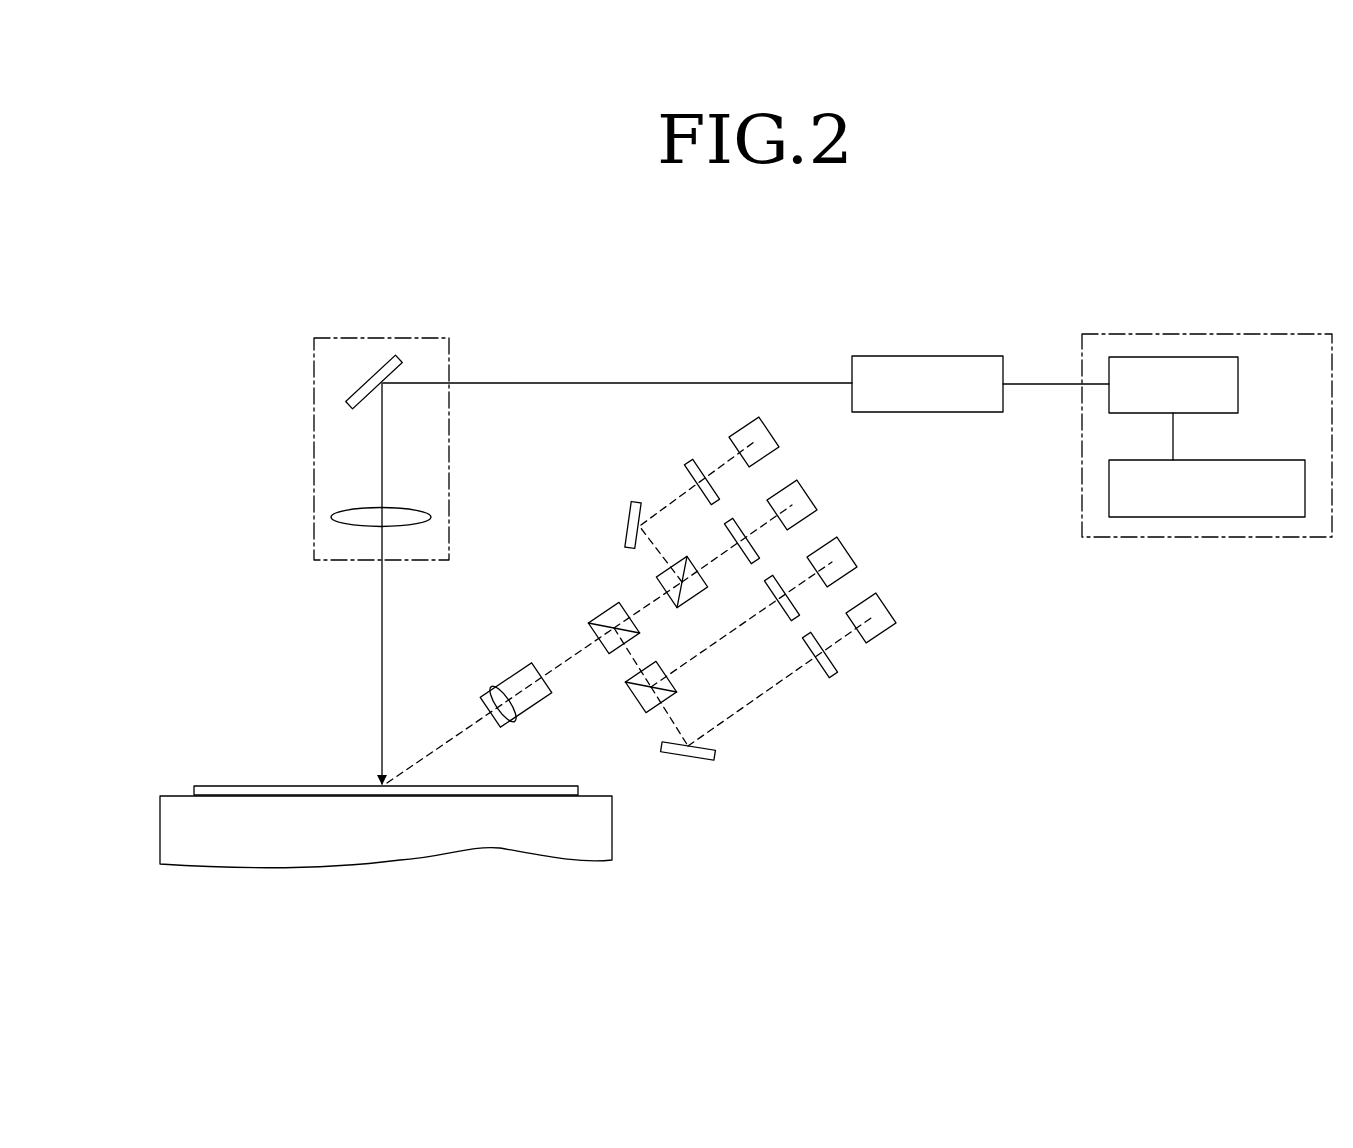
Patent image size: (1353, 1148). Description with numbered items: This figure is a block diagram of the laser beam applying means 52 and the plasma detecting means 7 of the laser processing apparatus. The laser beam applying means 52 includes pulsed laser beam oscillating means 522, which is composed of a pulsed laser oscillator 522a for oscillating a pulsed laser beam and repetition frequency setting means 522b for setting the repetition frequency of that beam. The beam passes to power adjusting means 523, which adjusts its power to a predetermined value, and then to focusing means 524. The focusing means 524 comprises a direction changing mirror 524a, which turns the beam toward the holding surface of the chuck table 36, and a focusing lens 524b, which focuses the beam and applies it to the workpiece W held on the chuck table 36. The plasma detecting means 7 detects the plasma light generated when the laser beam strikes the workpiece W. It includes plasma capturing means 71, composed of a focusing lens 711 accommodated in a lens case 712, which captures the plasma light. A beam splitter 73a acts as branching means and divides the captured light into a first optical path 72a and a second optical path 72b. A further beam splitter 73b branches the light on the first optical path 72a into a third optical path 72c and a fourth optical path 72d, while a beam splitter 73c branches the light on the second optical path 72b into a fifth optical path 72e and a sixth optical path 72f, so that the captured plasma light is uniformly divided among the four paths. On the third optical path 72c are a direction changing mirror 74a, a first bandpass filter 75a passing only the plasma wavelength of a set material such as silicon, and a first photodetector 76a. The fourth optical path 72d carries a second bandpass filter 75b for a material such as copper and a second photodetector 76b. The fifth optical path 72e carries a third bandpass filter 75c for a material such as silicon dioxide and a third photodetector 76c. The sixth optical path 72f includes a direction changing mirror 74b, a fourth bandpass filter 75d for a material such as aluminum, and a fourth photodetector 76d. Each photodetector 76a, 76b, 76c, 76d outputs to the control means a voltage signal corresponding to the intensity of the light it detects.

The laser beam applying means 52 is at (635, 354).
The pulsed laser beam oscillating means 522 is at (1243, 331).
The pulsed laser oscillator 522a is at (1161, 357).
The repetition frequency setting means 522b is at (1261, 460).
The power adjusting means 523 is at (920, 356).
The focusing means 524 is at (328, 336).
The direction changing mirror 524a is at (356, 390).
The focusing lens 524b is at (346, 512).
The plasma detecting means 7 is at (552, 598).
The plasma capturing means 71 is at (487, 674).
The focusing lens 711 is at (522, 706).
The lens case 712 is at (481, 688).
The first optical path 72a is at (637, 603).
The second optical path 72b is at (630, 667).
The third optical path 72c is at (662, 549).
The fourth optical path 72d is at (721, 564).
The fifth optical path 72e is at (717, 649).
The sixth optical path 72f is at (666, 719).
The beam splitter 73a is at (602, 608).
The beam splitter 73b is at (693, 604).
The beam splitter 73c is at (641, 700).
The direction changing mirror 74a is at (629, 504).
The direction changing mirror 74b is at (703, 762).
The first bandpass filter 75a is at (700, 464).
The second bandpass filter 75b is at (742, 530).
The third bandpass filter 75c is at (798, 614).
The fourth bandpass filter 75d is at (836, 667).
The first photodetector 76a is at (775, 428).
The second photodetector 76b is at (811, 494).
The third photodetector 76c is at (851, 552).
The fourth photodetector 76d is at (892, 605).
The workpiece W is at (212, 786).
The chuck table 36 is at (158, 835).